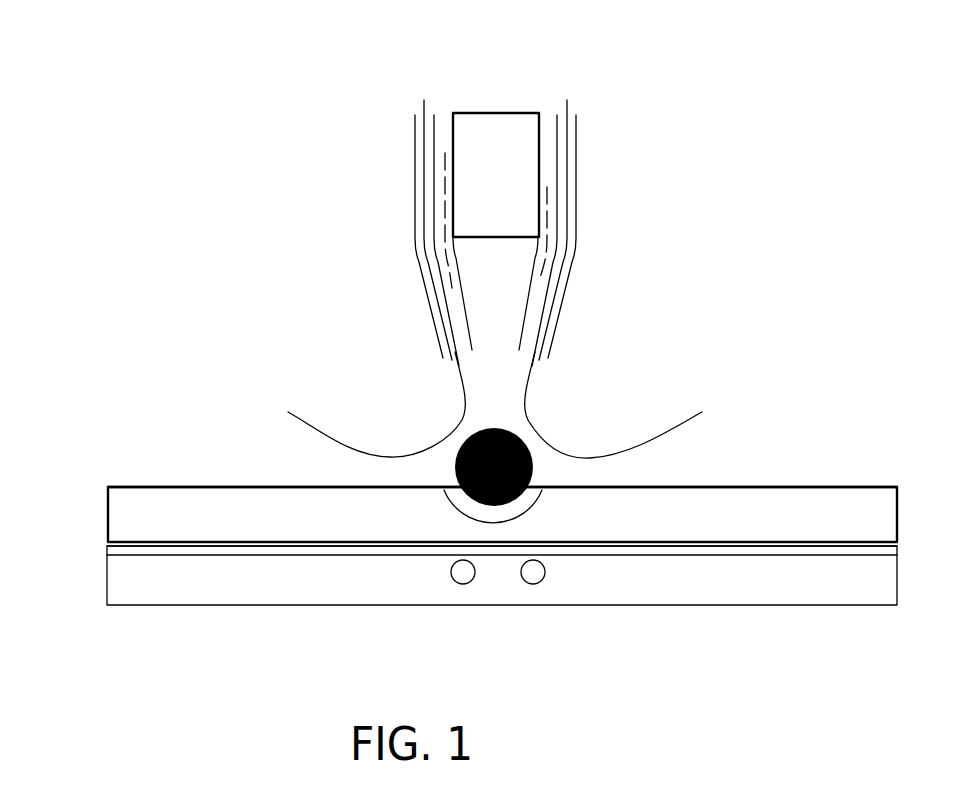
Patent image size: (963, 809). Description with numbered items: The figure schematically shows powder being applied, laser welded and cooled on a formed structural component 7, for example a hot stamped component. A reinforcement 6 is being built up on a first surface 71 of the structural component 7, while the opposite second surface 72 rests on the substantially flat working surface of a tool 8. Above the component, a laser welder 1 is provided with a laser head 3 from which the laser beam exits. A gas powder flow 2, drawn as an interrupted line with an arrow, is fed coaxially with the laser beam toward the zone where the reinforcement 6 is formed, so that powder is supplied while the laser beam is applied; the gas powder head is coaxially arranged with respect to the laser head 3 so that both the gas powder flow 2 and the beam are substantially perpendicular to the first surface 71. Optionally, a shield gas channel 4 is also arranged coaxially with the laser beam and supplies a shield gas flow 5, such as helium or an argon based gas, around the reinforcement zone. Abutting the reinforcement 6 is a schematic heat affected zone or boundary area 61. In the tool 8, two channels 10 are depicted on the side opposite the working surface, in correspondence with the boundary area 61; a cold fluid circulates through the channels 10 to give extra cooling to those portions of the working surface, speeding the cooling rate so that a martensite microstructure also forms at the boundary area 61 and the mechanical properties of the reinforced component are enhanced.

The laser welder 1 is at (452, 128).
The gas powder flow 2 is at (548, 193).
The laser head 3 is at (467, 317).
The shield gas channel 4 is at (425, 183).
The shield gas flow 5 is at (303, 412).
The reinforcement 6 is at (525, 443).
The formed structural component 7 is at (732, 502).
The first surface 71 is at (190, 487).
The second surface 72 is at (275, 545).
The tool 8 is at (108, 548).
The channels 10 is at (463, 575).
The boundary area 61 is at (537, 500).